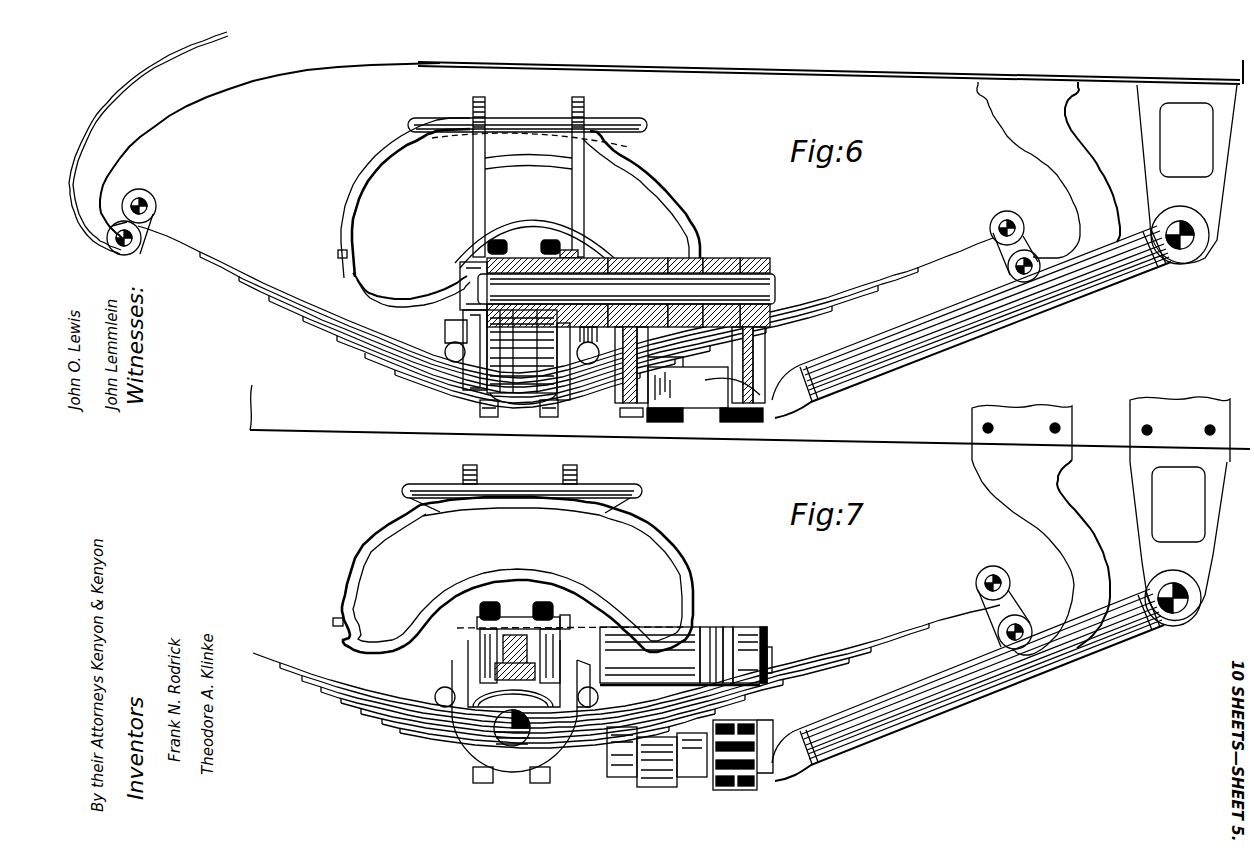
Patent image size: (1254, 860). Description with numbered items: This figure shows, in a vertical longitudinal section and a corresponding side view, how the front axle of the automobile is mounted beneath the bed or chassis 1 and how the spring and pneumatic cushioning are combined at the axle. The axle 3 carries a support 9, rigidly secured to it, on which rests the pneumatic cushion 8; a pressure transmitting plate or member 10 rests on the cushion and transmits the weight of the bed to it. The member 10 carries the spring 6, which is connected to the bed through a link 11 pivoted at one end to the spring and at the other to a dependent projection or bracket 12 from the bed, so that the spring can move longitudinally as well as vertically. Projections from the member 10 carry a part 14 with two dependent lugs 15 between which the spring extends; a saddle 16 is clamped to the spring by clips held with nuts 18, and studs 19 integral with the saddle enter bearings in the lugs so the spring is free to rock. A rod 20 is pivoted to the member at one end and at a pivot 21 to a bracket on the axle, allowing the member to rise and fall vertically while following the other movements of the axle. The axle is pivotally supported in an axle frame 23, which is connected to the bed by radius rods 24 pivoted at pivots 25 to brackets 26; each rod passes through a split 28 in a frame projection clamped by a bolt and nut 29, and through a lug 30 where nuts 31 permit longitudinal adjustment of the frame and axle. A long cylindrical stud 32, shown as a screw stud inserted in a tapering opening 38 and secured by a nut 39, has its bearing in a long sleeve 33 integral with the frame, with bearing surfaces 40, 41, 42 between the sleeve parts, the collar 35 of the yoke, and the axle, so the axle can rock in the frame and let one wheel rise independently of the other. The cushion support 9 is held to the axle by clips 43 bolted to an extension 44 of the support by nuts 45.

In FIG. 6, the bed or chassis 1 is at (1000, 72).
In FIG. 7, the bed or chassis 1 is at (926, 440).
In FIG. 6, the axle 3 is at (532, 250).
In FIG. 7, the axle 3 is at (520, 628).
In FIG. 6, the spring 6 is at (266, 288).
In FIG. 7, the spring 6 is at (395, 705).
In FIG. 6, the pneumatic cushion 8 is at (705, 210).
In FIG. 7, the pneumatic cushion 8 is at (678, 572).
In FIG. 6, the support 9 is at (410, 300).
In FIG. 7, the support 9 is at (612, 622).
In FIG. 6, the pressure transmitting plate or member 10 is at (603, 127).
In FIG. 7, the pressure transmitting plate or member 10 is at (612, 492).
In FIG. 6, the link 11 is at (155, 218).
In FIG. 7, the link 11 is at (1022, 600).
In FIG. 6, the dependent projection or bracket 12 is at (1048, 158).
In FIG. 7, the dependent projection or bracket 12 is at (1010, 500).
In FIG. 6, the part 14 is at (442, 318).
In FIG. 7, the lugs 15 is at (513, 775).
In FIG. 7, the saddle 16 is at (550, 757).
In FIG. 6, the nuts 18 is at (542, 421).
In FIG. 7, the nuts 18 is at (478, 783).
In FIG. 7, the studs 19 is at (503, 737).
In FIG. 6, the rod 20 is at (447, 362).
In FIG. 7, the rod 20 is at (434, 695).
In FIG. 6, the pivot 21 is at (472, 385).
In FIG. 6, the axle frame 23 is at (740, 380).
In FIG. 6, the radius rods 24 is at (985, 335).
In FIG. 7, the radius rods 24 is at (985, 700).
In FIG. 6, the pivots 25 is at (1186, 255).
In FIG. 7, the pivots 25 is at (1196, 594).
In FIG. 6, the brackets 26 is at (1148, 126).
In FIG. 7, the brackets 26 is at (1205, 550).
In FIG. 7, the split 28 is at (762, 772).
In FIG. 7, the bolt and nut 29 is at (735, 790).
In FIG. 6, the lug 30 is at (770, 345).
In FIG. 7, the lug 30 is at (660, 787).
In FIG. 6, the nuts 31 is at (632, 414).
In FIG. 7, the nuts 31 is at (625, 778).
In FIG. 6, the cylindrical stud 32 is at (780, 288).
In FIG. 7, the cylindrical stud 32 is at (772, 652).
In FIG. 6, the sleeve 33 is at (610, 258).
In FIG. 7, the sleeve 33 is at (765, 627).
In FIG. 6, the collar 35 is at (705, 258).
In FIG. 7, the collar 35 is at (706, 627).
In FIG. 6, the tapering opening 38 is at (517, 257).
In FIG. 6, the nut 39 is at (462, 270).
In FIG. 6, the bearing surface 40 is at (738, 260).
In FIG. 7, the bearing surface 40 is at (728, 627).
In FIG. 6, the bearing surface 41 is at (664, 257).
In FIG. 6, the bearing surface 42 is at (572, 250).
In FIG. 7, the clips 43 is at (480, 640).
In FIG. 7, the extension 44 is at (560, 640).
In FIG. 7, the nuts 45 is at (478, 610).